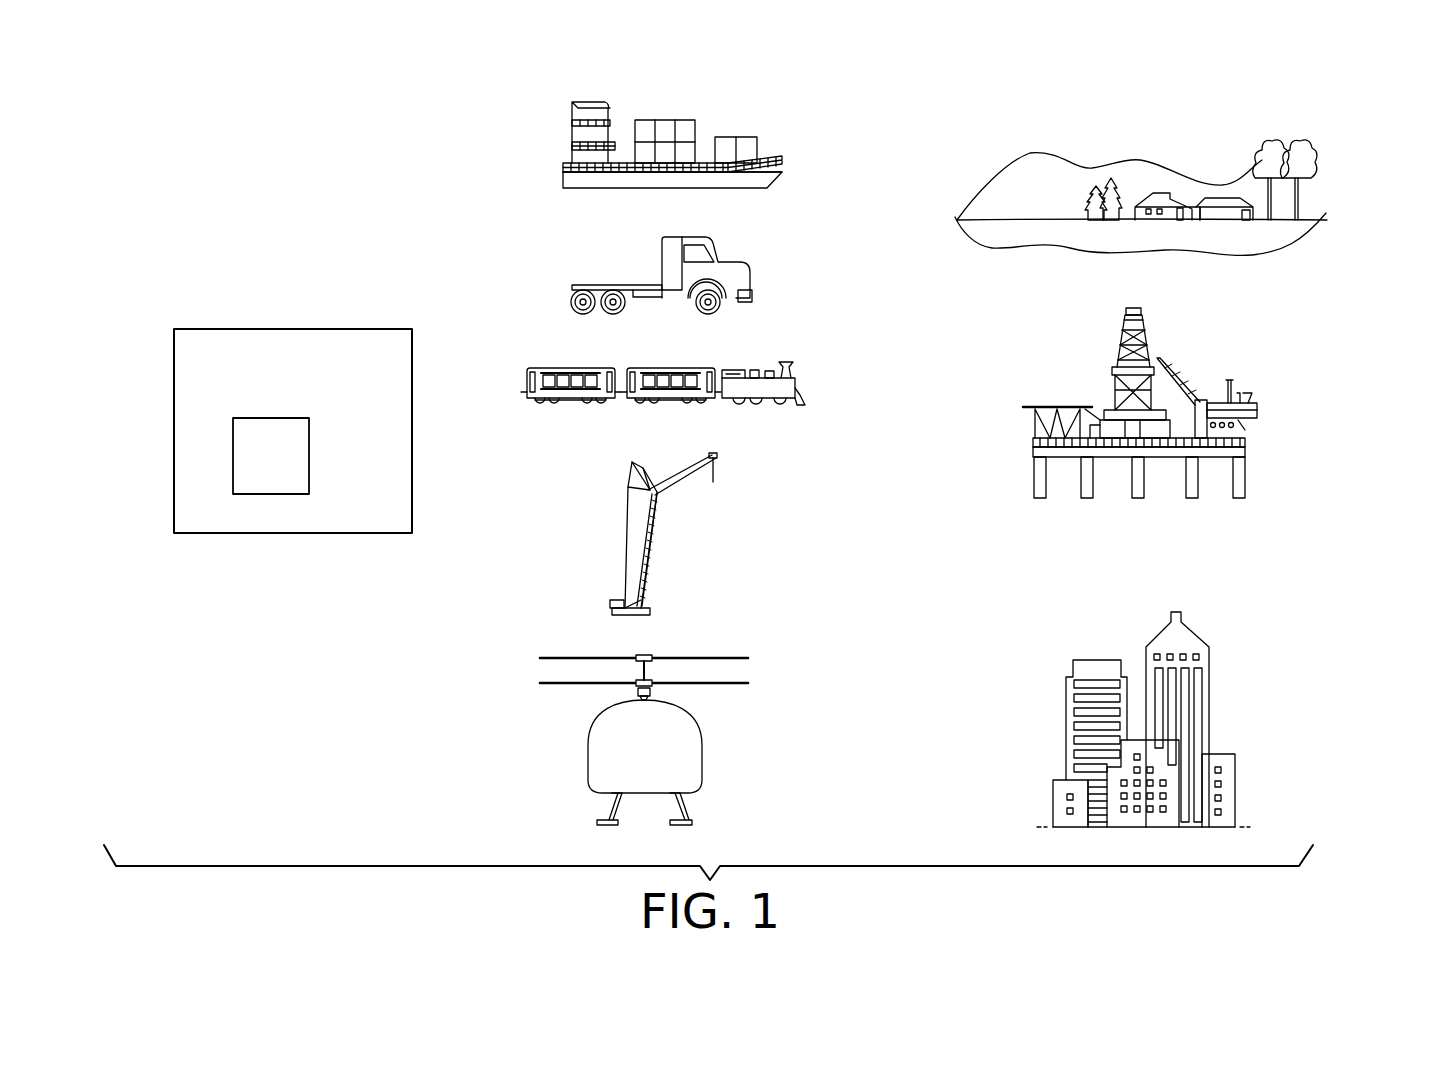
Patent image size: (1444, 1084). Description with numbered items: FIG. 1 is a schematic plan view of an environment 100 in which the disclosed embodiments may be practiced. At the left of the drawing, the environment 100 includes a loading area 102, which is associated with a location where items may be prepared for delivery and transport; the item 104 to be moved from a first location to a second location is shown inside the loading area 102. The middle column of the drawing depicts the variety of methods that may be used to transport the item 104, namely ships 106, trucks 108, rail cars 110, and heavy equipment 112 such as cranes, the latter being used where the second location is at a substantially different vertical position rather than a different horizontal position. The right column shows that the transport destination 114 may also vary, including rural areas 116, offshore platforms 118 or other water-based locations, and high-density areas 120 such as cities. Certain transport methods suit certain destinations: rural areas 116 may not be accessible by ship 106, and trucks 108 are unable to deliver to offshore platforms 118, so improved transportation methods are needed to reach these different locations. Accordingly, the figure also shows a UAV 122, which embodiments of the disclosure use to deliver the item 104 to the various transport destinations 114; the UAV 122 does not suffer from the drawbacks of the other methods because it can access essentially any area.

The environment 100 is at (1342, 92).
The loading area 102 is at (292, 534).
The item 104 is at (252, 467).
The ship 106 is at (782, 172).
The truck 108 is at (752, 282).
The rail car 110 is at (815, 412).
The heavy equipment 112 is at (694, 568).
The transport destination 114 is at (980, 102).
The rural area 116 is at (1346, 160).
The offshore platform 118 is at (1285, 388).
The high-density area 120 is at (1257, 717).
The UAV 122 is at (722, 800).